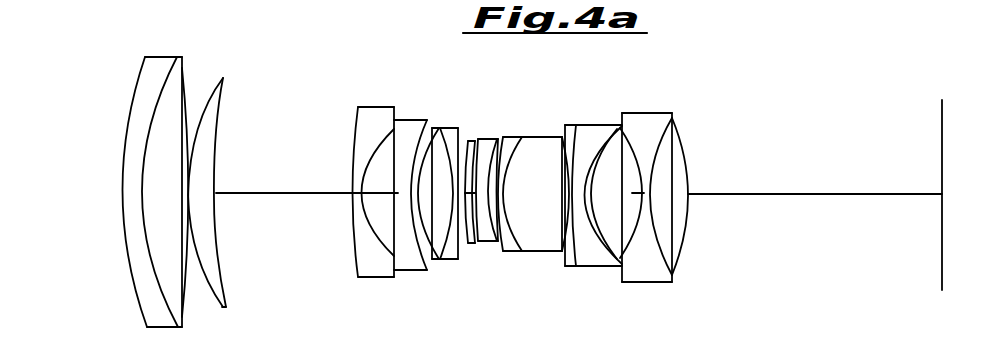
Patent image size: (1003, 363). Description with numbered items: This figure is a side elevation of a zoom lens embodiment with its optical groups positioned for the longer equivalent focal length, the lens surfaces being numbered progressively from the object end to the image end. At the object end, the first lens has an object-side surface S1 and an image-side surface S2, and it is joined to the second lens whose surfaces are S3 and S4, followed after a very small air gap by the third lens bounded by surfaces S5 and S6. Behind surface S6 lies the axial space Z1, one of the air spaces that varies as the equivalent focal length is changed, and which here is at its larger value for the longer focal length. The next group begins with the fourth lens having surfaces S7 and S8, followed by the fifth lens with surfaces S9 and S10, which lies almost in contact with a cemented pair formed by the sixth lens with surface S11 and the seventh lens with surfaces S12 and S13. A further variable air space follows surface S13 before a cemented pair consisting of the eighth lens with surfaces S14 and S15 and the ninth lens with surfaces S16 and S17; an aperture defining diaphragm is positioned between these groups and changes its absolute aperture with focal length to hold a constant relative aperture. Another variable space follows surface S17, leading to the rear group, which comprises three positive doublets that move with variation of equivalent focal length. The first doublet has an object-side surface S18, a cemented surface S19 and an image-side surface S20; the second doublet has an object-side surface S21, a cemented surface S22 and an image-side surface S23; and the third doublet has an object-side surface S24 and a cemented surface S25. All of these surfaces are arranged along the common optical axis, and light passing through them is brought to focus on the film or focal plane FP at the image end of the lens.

The lens surface S1 is at (136, 88).
The lens surface S2 is at (149, 129).
The lens surface S3 is at (183, 85).
The lens surface S4 is at (203, 112).
The lens surface S5 is at (218, 140).
The lens surface S6 is at (352, 160).
The lens surface S7 is at (370, 227).
The lens surface S8 is at (393, 229).
The lens surface S9 is at (425, 256).
The lens surface S10 is at (439, 127).
The lens surface S11 is at (443, 261).
The lens surface S12 is at (468, 141).
The lens surface S13 is at (470, 243).
The lens surface S14 is at (477, 139).
The lens surface S15 is at (492, 140).
The lens surface S16 is at (489, 243).
The lens surface S17 is at (499, 244).
The lens surface S18 is at (520, 248).
The lens surface S19 is at (553, 144).
The lens surface S20 is at (580, 104).
The lens surface S21 is at (597, 258).
The lens surface S22 is at (634, 142).
The lens surface S23 is at (623, 245).
The lens surface S24 is at (657, 163).
The lens surface S25 is at (688, 187).
The axial space Z1 is at (262, 194).
The focal plane FP is at (942, 132).